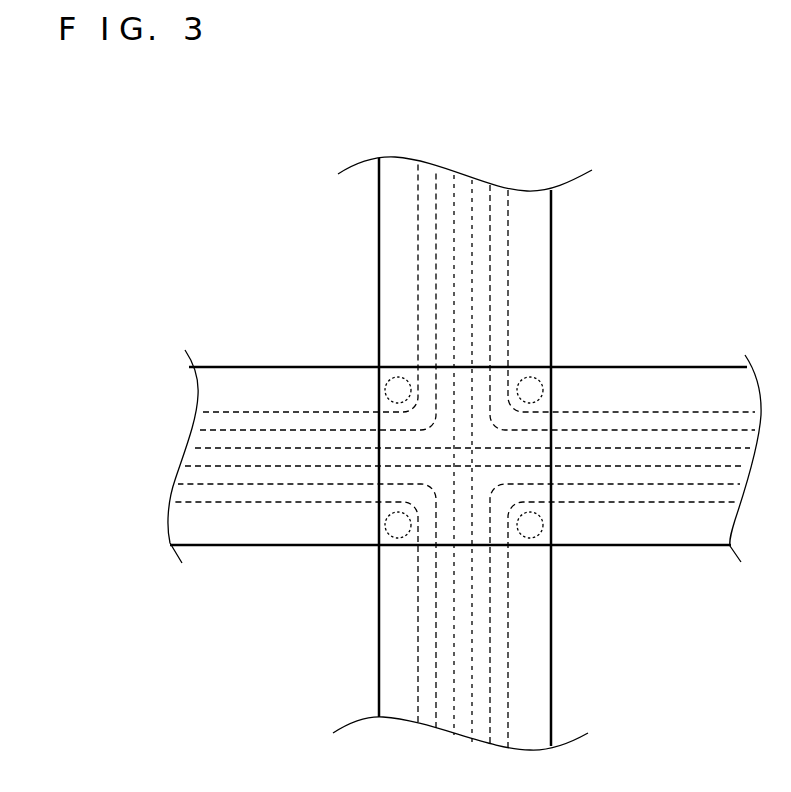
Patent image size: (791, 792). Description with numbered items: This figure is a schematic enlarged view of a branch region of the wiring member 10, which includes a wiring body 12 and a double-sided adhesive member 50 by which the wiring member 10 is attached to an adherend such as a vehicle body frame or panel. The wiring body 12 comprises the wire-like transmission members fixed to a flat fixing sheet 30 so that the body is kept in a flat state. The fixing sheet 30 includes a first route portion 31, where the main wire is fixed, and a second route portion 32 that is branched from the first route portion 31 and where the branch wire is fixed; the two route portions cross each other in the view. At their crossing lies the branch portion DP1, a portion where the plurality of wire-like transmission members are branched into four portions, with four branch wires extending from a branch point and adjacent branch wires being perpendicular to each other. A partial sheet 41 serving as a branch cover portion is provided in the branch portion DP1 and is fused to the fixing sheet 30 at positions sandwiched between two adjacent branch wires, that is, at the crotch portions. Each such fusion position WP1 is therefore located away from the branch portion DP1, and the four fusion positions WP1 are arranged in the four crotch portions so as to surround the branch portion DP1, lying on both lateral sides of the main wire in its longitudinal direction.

The wiring member 10 is at (226, 140).
The wiring body 12 is at (503, 260).
The fixing sheet 30 is at (458, 452).
The first route portion 31 is at (458, 450).
The second route portion 32 is at (535, 268).
The partial sheet 41 is at (463, 466).
The double-sided adhesive member 50 is at (490, 560).
The branch portion DP1 is at (404, 408).
The fusion position WP1 is at (388, 379).